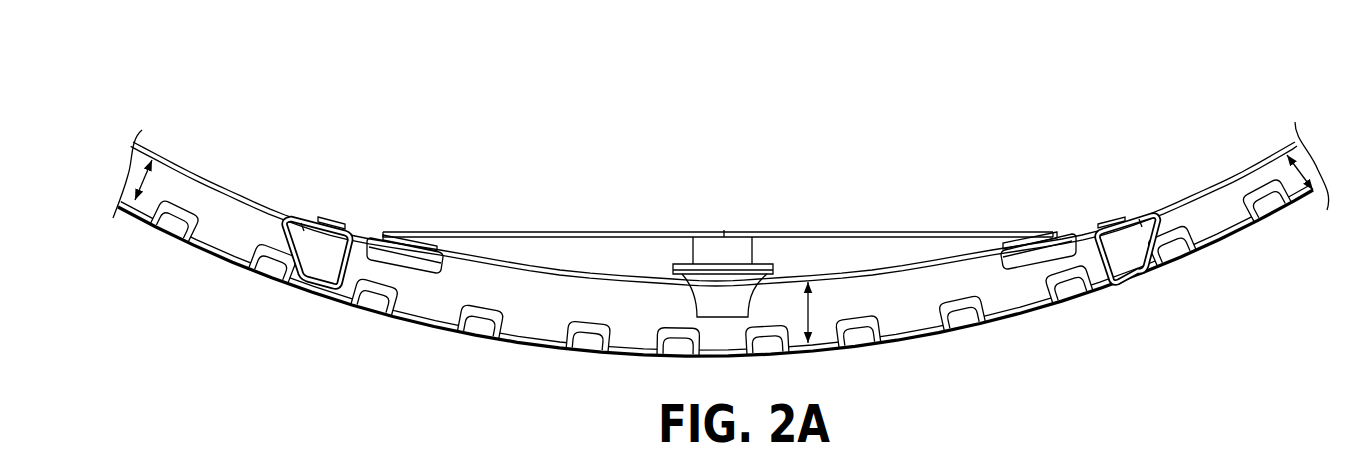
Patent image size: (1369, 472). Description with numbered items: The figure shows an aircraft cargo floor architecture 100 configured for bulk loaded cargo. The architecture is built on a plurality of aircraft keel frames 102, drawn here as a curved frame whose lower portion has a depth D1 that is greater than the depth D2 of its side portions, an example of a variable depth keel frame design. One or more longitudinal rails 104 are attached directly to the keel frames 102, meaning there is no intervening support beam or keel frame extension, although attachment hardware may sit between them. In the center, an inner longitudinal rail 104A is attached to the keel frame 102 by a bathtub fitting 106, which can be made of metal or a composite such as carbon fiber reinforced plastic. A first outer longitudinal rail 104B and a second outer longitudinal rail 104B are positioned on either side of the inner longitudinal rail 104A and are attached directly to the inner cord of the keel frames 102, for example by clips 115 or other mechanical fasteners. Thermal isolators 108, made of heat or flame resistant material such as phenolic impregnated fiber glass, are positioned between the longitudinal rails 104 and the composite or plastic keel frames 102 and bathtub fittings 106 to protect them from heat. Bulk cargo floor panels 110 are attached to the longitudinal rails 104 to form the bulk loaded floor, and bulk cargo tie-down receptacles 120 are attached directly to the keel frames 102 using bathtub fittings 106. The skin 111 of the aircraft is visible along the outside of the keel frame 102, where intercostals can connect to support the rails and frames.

The aircraft cargo floor architecture 100 is at (1258, 62).
The aircraft keel frame 102 is at (730, 257).
The longitudinal rail 104 is at (440, 242).
The inner longitudinal rail 104A is at (752, 244).
The outer longitudinal rail 104B is at (420, 242).
The bathtub fitting 106 is at (293, 218).
The thermal isolator 108 is at (378, 237).
The bulk cargo floor panel 110 is at (536, 232).
The skin 111 is at (484, 336).
The clip 115 is at (403, 273).
The bulk cargo tie-down receptacle 120 is at (328, 218).
The depth of lower portion of keel frame D1 is at (812, 312).
The depth of side portions of keel frame D2 is at (1295, 170).